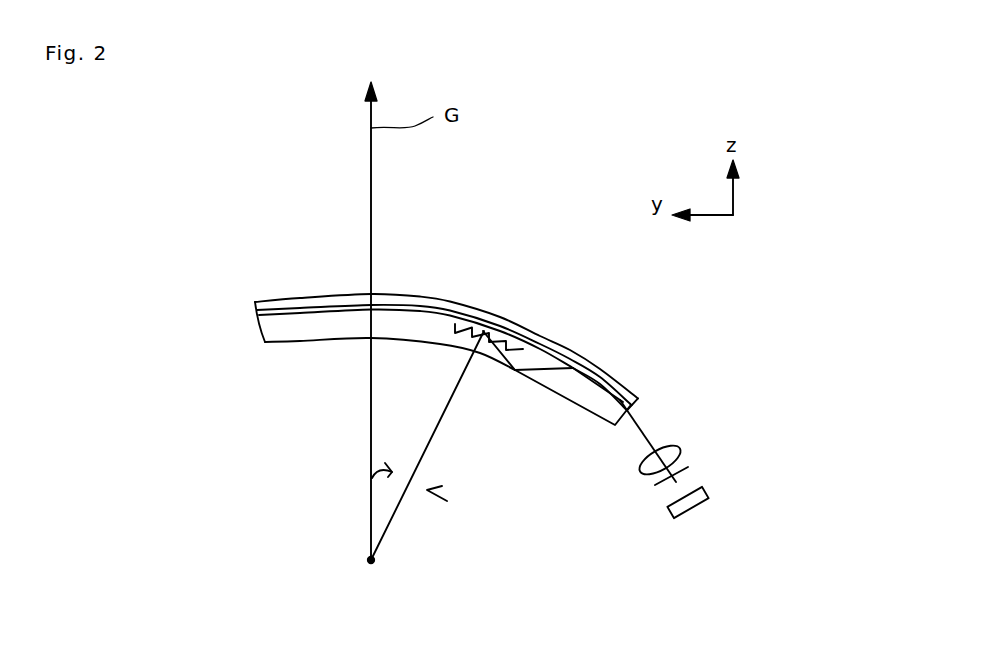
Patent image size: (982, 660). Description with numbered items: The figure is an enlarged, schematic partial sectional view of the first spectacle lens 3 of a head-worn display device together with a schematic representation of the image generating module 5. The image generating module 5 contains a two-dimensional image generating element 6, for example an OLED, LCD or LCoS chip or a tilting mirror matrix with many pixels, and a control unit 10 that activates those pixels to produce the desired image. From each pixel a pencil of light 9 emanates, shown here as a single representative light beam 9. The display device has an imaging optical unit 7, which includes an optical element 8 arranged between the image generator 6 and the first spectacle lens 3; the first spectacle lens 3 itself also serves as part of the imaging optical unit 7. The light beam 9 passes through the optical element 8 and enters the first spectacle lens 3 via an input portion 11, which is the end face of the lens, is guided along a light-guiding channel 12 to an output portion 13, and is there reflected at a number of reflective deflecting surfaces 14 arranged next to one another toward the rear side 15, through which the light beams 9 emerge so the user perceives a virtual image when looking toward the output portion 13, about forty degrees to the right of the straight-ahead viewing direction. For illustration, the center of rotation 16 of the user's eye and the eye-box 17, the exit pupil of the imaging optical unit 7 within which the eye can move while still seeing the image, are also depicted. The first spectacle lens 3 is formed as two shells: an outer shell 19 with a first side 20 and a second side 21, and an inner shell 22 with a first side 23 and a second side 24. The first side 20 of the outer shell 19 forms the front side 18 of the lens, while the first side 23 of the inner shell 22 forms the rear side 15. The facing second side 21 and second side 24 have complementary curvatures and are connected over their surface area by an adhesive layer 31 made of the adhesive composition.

The first spectacle lens 3 is at (249, 327).
The image generating module 5 is at (708, 460).
The image generating element 6 is at (690, 467).
The imaging optical unit 7 is at (699, 443).
The optical element 8 is at (654, 476).
The pencil of light 9 is at (650, 440).
The control unit 10 is at (692, 511).
The input portion 11 is at (598, 420).
The light-guiding channel 12 is at (558, 386).
The output portion 13 is at (487, 320).
The reflective deflecting surfaces 14 is at (462, 332).
The rear side 15 is at (295, 343).
The center of rotation 16 is at (375, 560).
The eye-box 17 is at (373, 483).
The front side 18 is at (282, 300).
The outer shell 19 is at (328, 302).
The first side 20 is at (407, 298).
The second side 21 is at (441, 309).
The inner shell 22 is at (272, 338).
The first side 23 is at (338, 340).
The second side 24 is at (413, 318).
The adhesive layer 31 is at (556, 357).